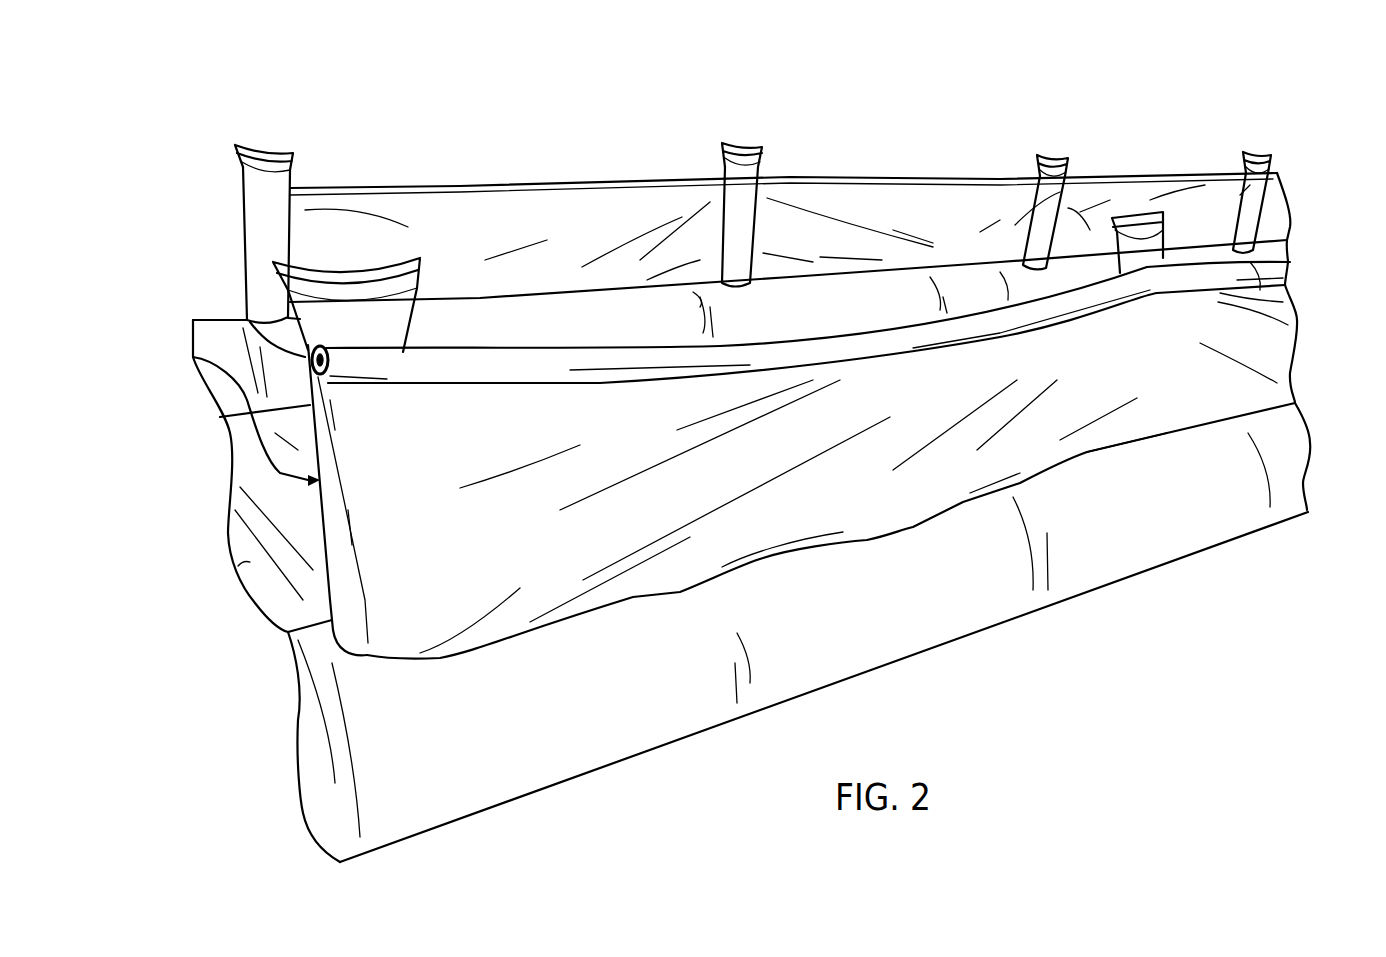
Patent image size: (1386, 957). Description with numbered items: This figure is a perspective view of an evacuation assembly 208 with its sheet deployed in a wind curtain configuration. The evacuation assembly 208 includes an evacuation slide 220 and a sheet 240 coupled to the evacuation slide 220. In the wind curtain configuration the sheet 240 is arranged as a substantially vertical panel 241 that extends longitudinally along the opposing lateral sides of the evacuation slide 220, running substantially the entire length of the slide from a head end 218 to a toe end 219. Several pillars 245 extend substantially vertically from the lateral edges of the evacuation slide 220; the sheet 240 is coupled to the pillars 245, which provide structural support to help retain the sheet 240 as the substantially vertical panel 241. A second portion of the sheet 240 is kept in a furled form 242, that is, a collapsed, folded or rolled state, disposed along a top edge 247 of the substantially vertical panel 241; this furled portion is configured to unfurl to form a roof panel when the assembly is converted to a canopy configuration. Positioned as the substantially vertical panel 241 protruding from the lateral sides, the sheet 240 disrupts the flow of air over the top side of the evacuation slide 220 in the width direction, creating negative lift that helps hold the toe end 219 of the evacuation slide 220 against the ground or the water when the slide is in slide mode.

The evacuation assembly 208 is at (208, 78).
The head end 218 is at (210, 463).
The toe end 219 is at (1320, 334).
The evacuation slide 220 is at (312, 725).
The sheet 240 is at (458, 223).
The substantially vertical panel 241 is at (300, 358).
The furled form 242 is at (243, 317).
The pillars 245 is at (370, 323).
The top edge 247 is at (608, 182).